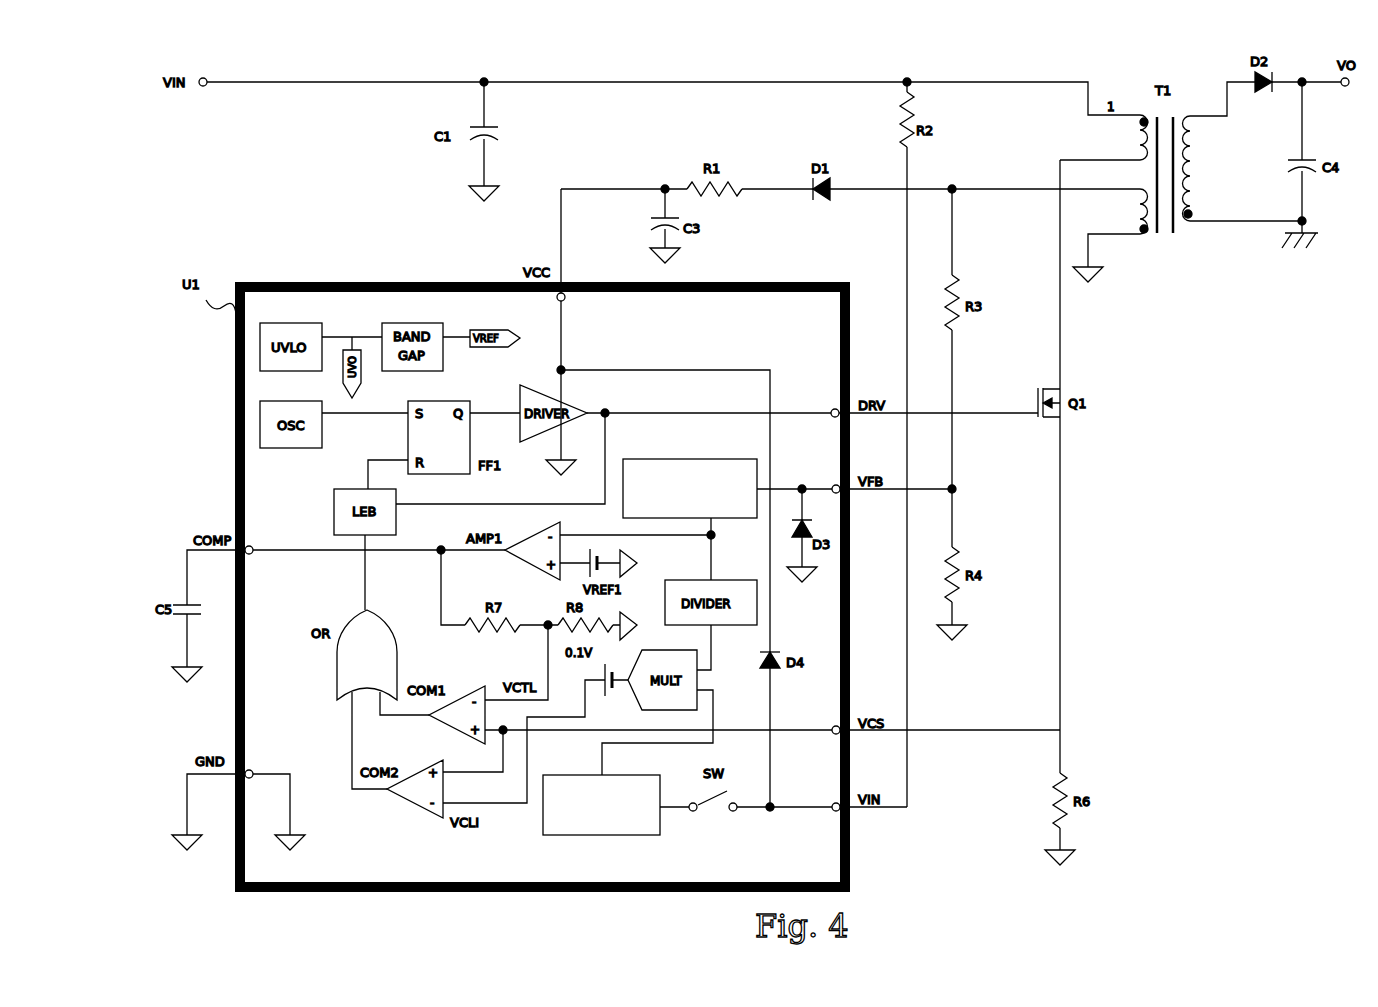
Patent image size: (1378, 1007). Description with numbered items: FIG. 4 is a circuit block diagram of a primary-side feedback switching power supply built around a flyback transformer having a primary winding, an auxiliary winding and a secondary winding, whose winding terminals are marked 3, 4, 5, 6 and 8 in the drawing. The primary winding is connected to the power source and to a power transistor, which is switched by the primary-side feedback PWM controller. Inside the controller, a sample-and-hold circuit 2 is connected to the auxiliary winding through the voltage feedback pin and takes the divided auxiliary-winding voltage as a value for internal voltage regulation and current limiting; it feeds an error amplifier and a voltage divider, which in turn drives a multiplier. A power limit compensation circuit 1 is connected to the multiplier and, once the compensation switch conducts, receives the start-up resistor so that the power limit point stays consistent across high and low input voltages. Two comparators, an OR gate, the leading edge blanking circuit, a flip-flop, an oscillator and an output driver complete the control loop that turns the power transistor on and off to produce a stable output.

The power limit compensation circuit 1 is at (660, 836).
The sample-and-hold circuit 2 is at (730, 457).
The transformer T1 primary winding pin 3 is at (1104, 137).
The transformer T1 auxiliary winding pin 4 is at (1127, 204).
The transformer T1 auxiliary winding pin 5 is at (1110, 250).
The transformer T1 secondary winding pin 6 is at (1243, 214).
The transformer T1 secondary winding pin 8 is at (1219, 151).